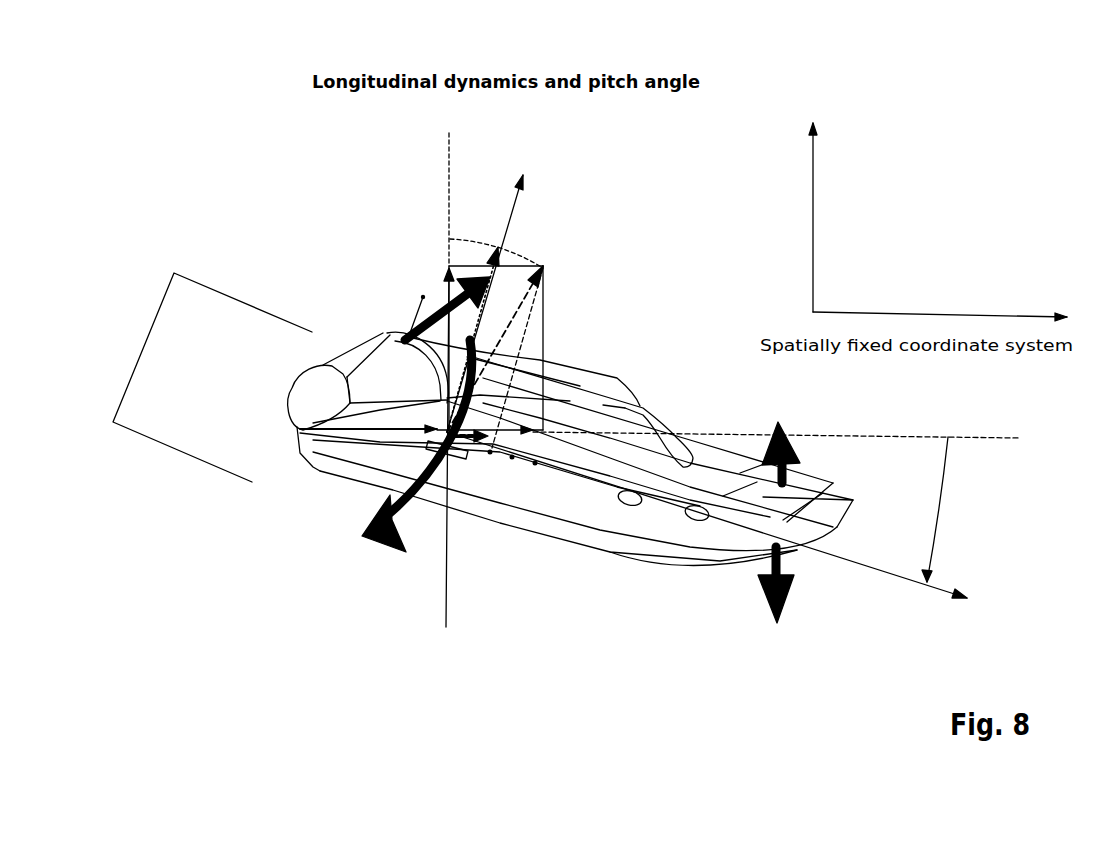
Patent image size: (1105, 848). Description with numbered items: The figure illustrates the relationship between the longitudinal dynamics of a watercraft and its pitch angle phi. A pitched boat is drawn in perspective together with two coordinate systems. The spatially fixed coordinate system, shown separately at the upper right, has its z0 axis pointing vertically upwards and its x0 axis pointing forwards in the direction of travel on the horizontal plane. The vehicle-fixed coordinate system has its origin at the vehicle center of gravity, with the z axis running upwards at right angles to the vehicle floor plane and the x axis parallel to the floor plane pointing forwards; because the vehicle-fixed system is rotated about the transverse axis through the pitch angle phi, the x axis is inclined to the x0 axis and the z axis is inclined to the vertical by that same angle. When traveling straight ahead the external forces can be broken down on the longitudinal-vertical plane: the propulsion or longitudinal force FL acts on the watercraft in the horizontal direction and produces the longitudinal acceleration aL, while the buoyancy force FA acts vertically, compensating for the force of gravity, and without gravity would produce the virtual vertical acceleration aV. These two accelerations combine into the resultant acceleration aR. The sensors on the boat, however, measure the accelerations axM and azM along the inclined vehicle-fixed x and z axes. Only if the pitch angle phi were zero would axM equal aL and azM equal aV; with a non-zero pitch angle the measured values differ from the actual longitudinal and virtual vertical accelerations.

The longitudinal force FL is at (344, 428).
The buoyancy force FA is at (462, 383).
The virtual vertical acceleration aV is at (430, 322).
The measured vertical acceleration azM is at (511, 308).
The resultant acceleration aR is at (600, 268).
The longitudinal acceleration aL is at (536, 406).
The measured longitudinal acceleration axM is at (495, 464).
The vehicle-fixed x axis x is at (717, 524).
The vehicle-fixed z axis z is at (485, 295).
The spatially fixed x0 axis x0 is at (940, 303).
The spatially fixed z0 axis z0 is at (827, 216).
The pitch angle phi is at (706, 400).